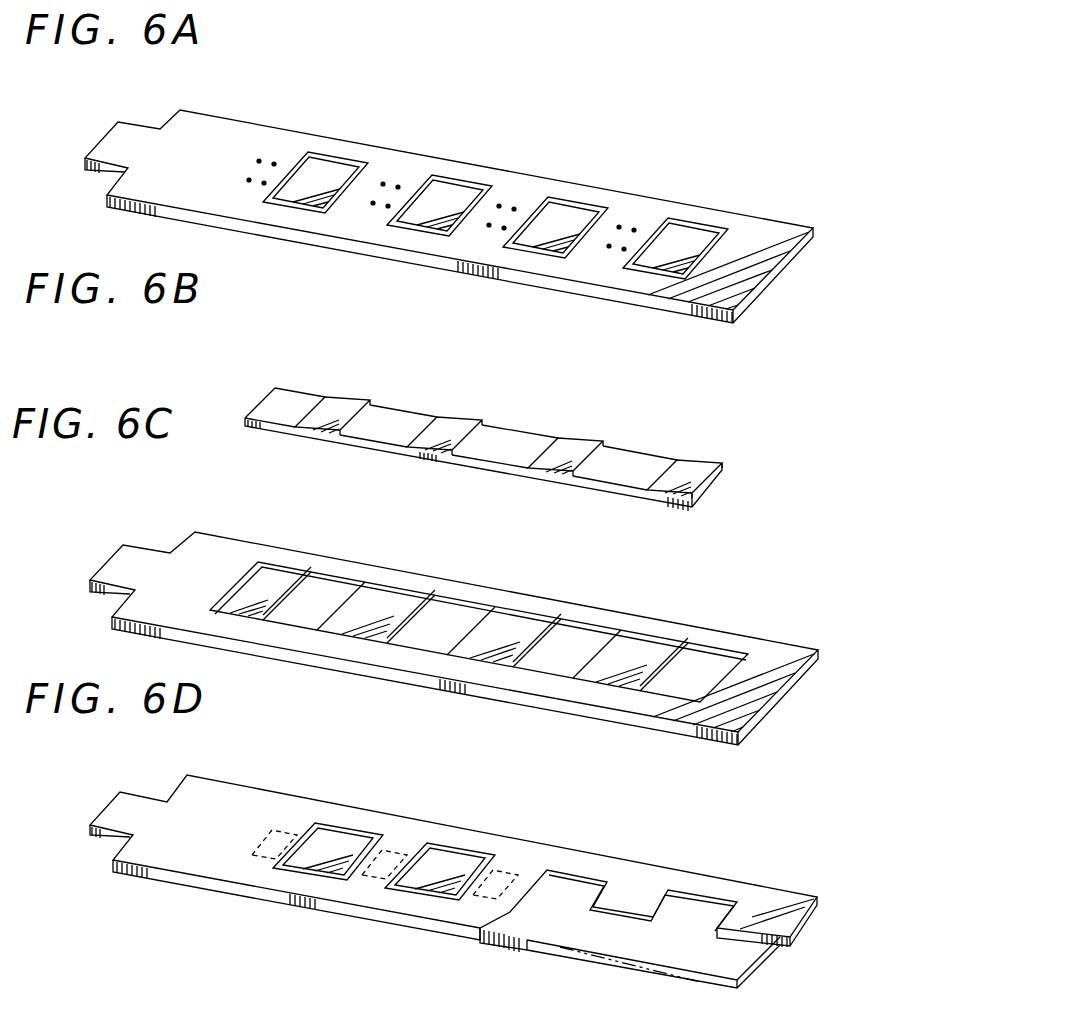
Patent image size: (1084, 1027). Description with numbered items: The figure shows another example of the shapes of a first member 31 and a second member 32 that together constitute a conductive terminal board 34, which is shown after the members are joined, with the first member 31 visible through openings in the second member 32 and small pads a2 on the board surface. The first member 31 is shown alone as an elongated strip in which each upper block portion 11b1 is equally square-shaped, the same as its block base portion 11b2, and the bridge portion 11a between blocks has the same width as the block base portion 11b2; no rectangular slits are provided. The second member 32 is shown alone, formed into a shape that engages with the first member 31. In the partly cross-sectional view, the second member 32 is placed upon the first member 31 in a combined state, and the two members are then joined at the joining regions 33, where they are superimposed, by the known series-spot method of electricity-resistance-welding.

In FIG. 6A, the first member 31 is at (684, 238).
In FIG. 6B, the first member 31 is at (254, 389).
In FIG. 6C, the first member 31 is at (459, 629).
In FIG. 6D, the first member 31 is at (707, 910).
In FIG. 6A, the second member 32 is at (767, 227).
In FIG. 6C, the second member 32 is at (180, 525).
In FIG. 6D, the second member 32 is at (652, 873).
In FIG. 6D, the joining regions 33 is at (288, 832).
In FIG. 6A, the conductive terminal board 34 is at (612, 167).
In FIG. 6A, the solder pads a2 is at (398, 185).
In FIG. 6B, the bridge portion 11a is at (507, 428).
In FIG. 6B, the upper block portion 11b1 is at (338, 397).
In FIG. 6B, the block base portion 11b2 is at (313, 440).